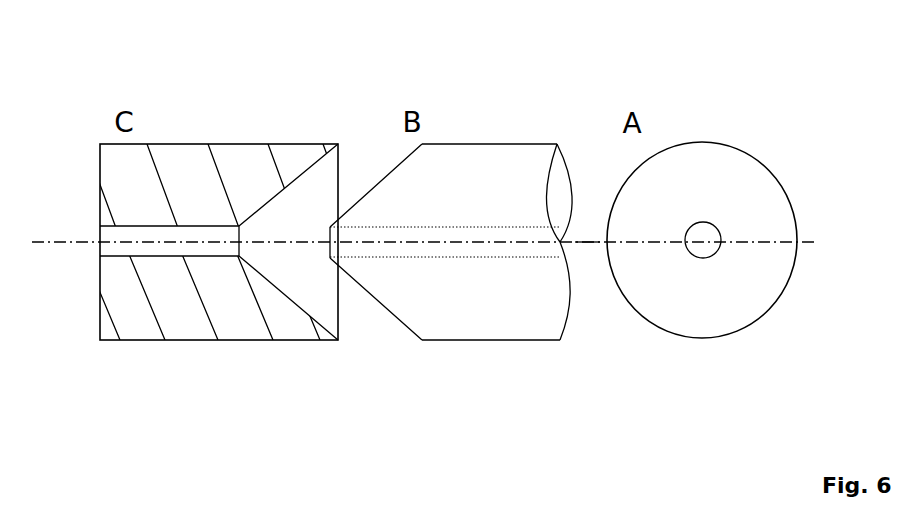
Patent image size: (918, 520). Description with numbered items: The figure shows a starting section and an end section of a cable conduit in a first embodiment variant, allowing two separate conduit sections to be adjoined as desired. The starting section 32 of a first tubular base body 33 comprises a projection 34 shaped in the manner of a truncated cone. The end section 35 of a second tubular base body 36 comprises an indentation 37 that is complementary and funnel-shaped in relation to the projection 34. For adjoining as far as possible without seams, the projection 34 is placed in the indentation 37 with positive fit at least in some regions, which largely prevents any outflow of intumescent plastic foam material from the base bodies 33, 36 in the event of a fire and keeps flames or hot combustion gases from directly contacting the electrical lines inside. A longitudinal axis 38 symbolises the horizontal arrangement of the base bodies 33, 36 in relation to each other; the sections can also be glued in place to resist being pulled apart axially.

The starting section 32 is at (470, 100).
The first tubular base body 33 is at (486, 322).
The projection 34 is at (377, 300).
The end section 35 is at (186, 104).
The second tubular base body 36 is at (198, 318).
The indentation 37 is at (303, 176).
The longitudinal axis 38 is at (587, 242).